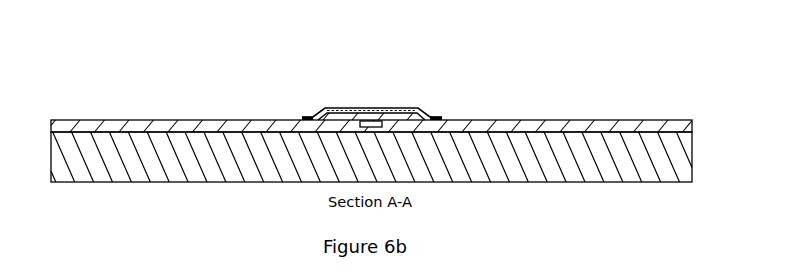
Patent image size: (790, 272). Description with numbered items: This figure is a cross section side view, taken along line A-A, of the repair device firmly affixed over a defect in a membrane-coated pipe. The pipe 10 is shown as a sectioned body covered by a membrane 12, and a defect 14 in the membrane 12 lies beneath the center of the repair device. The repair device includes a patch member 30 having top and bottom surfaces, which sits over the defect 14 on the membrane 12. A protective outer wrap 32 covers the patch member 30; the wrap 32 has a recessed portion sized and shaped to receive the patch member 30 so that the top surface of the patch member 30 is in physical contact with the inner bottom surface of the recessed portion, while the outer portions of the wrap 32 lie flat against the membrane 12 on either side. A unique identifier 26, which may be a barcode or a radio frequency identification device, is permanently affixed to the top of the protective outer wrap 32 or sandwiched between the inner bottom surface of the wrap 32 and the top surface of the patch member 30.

The pipe 10 is at (367, 115).
The membrane 12 is at (168, 125).
The defect 14 is at (371, 124).
The unique identifier 26 is at (385, 112).
The patch member 30 is at (340, 112).
The protective outer wrap 32 is at (432, 116).